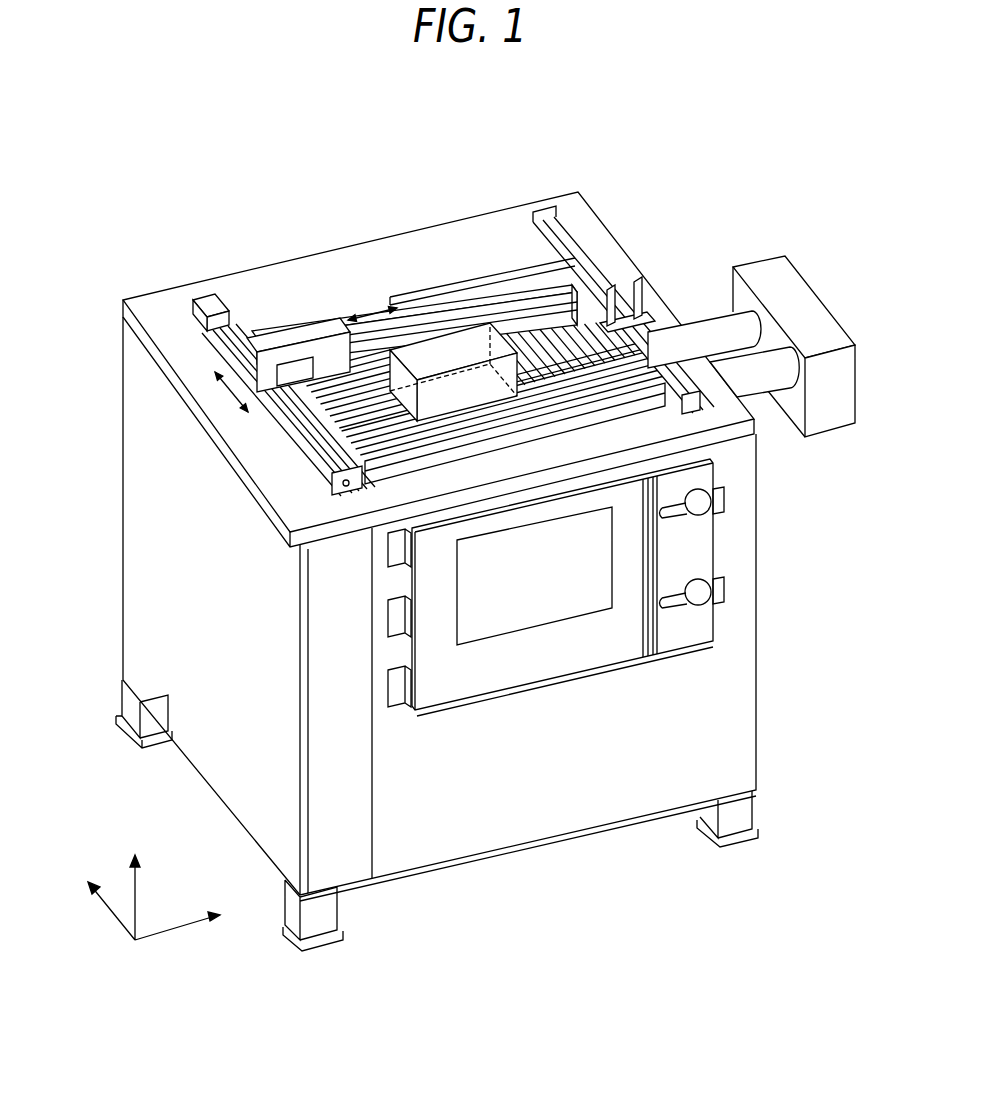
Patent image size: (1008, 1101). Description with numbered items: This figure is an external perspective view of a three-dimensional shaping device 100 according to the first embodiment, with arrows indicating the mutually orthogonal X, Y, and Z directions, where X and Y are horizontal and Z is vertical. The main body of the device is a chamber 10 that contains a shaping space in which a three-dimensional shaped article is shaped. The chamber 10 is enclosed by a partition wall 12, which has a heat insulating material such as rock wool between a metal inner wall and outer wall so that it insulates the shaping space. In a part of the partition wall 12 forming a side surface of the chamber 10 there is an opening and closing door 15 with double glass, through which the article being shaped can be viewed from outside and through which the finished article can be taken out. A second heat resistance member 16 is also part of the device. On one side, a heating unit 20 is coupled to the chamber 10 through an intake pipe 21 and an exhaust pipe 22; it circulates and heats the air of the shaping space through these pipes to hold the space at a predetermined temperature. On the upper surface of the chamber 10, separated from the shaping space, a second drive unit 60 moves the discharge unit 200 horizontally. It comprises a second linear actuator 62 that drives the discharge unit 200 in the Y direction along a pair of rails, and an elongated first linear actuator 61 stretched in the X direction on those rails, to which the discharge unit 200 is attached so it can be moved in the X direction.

The three-dimensional shaping device 100 is at (165, 132).
The chamber 10 is at (175, 273).
The partition wall 12 is at (193, 608).
The opening and closing door 15 is at (553, 608).
The second heat resistance member 16 is at (350, 396).
The heating unit 20 is at (762, 262).
The intake pipe 21 is at (712, 310).
The exhaust pipe 22 is at (760, 395).
The second drive unit 60 is at (193, 205).
The first linear actuator 61 is at (333, 347).
The second linear actuator 62 is at (222, 298).
The discharge unit 200 is at (423, 417).